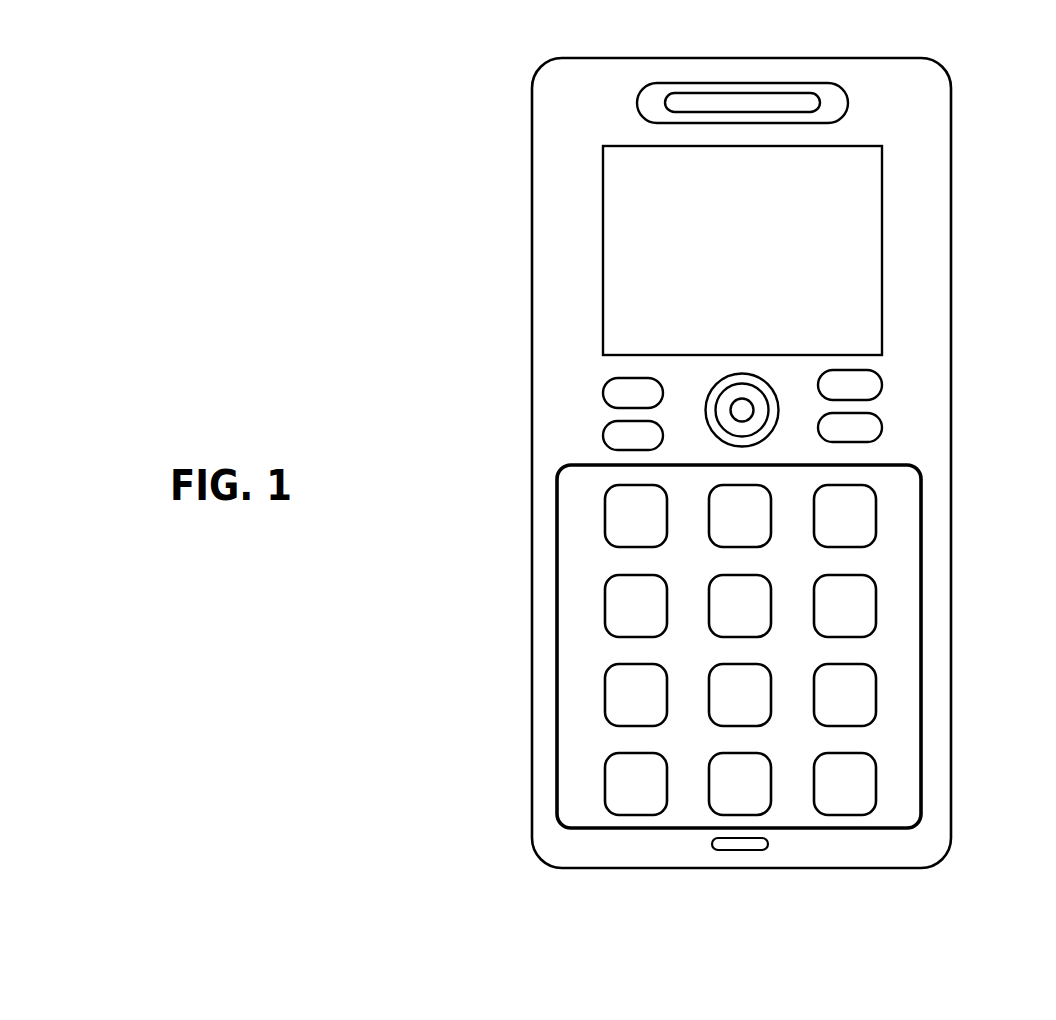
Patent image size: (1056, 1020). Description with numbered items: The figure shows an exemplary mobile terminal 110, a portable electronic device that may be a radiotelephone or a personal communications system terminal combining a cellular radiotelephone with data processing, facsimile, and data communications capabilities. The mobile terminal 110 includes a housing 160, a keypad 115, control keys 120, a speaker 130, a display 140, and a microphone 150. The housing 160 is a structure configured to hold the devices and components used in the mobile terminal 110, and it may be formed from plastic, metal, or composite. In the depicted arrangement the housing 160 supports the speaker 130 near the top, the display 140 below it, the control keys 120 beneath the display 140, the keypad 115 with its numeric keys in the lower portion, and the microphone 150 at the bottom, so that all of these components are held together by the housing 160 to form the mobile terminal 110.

The mobile terminal 110 is at (400, 124).
The keypad 115 is at (690, 646).
The control keys 120 is at (970, 360).
The speaker 130 is at (742, 71).
The display 140 is at (748, 248).
The microphone 150 is at (725, 873).
The housing 160 is at (779, 463).